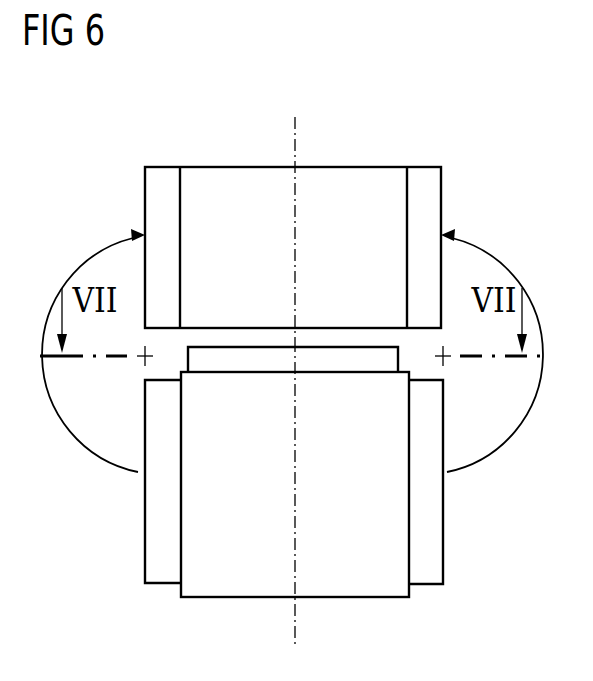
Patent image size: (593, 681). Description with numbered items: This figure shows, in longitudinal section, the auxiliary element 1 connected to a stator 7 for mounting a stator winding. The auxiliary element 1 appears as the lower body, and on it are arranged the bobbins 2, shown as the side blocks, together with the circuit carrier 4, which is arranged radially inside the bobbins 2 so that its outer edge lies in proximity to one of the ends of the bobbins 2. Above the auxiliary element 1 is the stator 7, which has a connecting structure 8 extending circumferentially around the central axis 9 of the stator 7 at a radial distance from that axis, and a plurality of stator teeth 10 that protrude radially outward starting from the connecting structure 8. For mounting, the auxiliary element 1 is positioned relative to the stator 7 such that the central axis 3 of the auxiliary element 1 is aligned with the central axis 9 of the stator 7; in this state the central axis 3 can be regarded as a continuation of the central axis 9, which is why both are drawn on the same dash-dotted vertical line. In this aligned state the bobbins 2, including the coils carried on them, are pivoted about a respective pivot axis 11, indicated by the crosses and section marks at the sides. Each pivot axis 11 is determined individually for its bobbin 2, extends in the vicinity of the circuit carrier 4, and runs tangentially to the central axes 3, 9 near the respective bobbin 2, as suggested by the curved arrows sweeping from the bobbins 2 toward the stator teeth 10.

The auxiliary element 1 is at (230, 588).
The bobbins 2 is at (163, 574).
The central axis of the auxiliary element 3 is at (296, 636).
The circuit carrier 4 is at (351, 360).
The stator 7 is at (294, 176).
The connecting structure 8 is at (230, 175).
The central axis of the stator 9 is at (296, 130).
The stator teeth 10 is at (162, 175).
The pivot axis 11 is at (145, 358).